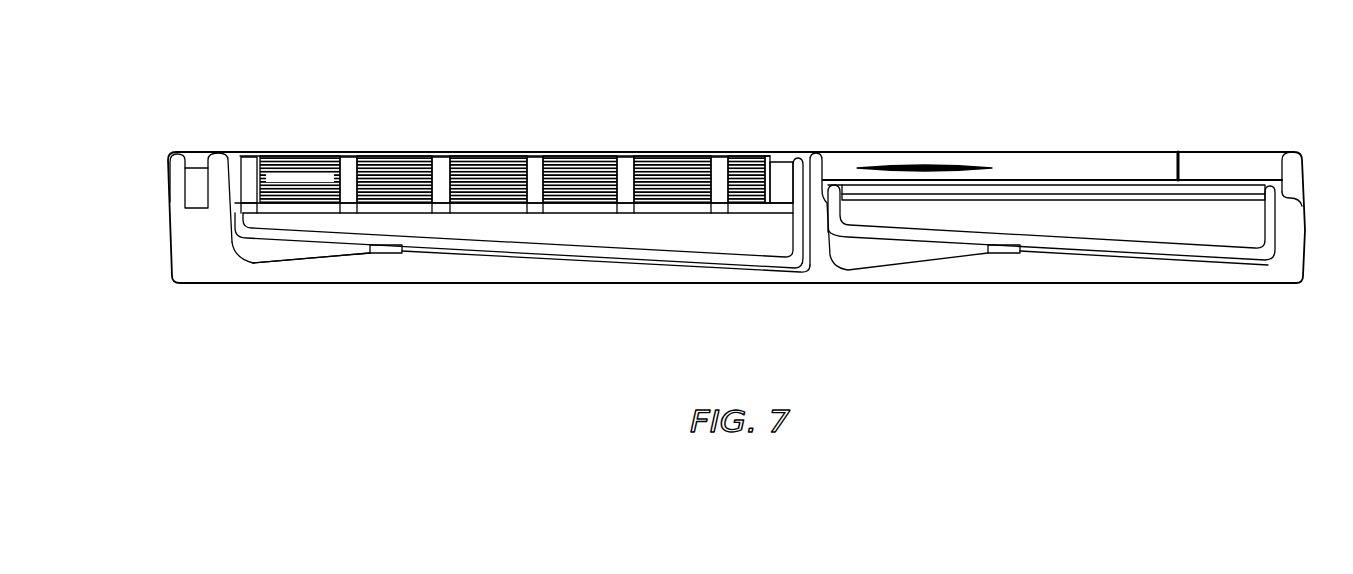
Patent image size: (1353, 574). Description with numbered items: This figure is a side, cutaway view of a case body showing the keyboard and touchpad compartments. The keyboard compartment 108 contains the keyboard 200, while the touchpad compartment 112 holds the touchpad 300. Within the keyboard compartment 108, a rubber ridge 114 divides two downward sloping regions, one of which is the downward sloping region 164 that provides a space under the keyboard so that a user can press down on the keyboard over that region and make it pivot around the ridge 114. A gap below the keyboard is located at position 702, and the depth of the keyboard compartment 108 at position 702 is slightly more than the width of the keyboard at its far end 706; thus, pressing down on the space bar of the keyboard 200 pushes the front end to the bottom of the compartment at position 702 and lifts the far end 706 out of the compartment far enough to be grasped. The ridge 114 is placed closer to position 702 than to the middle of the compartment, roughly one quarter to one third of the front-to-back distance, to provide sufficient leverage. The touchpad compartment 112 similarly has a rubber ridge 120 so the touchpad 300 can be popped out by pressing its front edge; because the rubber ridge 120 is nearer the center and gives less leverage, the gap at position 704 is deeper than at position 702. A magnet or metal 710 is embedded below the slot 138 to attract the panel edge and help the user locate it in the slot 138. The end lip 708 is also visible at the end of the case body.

The slot 138 is at (194, 112).
The keyboard compartment 108 is at (514, 139).
The keyboard 200 is at (608, 152).
The far end 706 is at (809, 122).
The touchpad compartment 112 is at (1030, 110).
The touchpad 300 is at (1180, 218).
The end lip 708 is at (1285, 115).
The magnet or metal 710 is at (185, 200).
The position 702 is at (245, 265).
The downward sloping region 164 is at (296, 262).
The ridge 114 is at (387, 255).
The position 704 is at (840, 272).
The rubber ridge 120 is at (1006, 256).